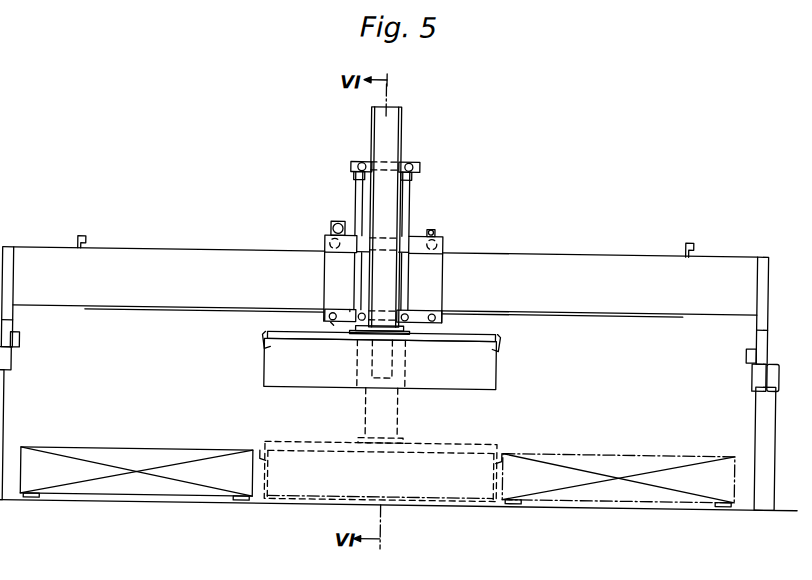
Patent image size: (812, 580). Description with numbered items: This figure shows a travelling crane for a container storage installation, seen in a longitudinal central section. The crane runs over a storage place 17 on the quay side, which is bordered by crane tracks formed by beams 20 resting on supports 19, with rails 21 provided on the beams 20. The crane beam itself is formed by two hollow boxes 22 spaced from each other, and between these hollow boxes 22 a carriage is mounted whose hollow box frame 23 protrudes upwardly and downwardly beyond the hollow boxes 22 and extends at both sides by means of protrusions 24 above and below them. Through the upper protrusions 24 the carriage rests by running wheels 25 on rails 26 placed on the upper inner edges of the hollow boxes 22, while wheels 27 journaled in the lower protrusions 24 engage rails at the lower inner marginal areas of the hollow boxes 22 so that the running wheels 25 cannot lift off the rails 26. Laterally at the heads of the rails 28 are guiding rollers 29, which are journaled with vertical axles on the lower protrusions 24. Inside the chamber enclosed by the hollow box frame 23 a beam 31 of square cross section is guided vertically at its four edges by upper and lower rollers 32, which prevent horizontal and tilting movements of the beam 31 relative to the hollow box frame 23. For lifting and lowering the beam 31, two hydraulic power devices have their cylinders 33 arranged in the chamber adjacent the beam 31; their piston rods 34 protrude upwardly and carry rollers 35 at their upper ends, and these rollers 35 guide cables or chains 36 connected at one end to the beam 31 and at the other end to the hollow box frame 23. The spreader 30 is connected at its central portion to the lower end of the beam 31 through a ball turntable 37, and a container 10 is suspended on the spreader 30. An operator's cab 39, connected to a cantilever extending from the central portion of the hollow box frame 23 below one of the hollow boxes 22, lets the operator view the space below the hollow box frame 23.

The container 10 is at (497, 378).
The storage place 17 is at (258, 507).
The support 19 is at (5, 420).
The beam 20 is at (10, 370).
The rail 21 is at (18, 350).
The hollow box 22 is at (540, 254).
The hollow box frame 23 is at (440, 268).
The protrusion 24 is at (325, 318).
The running wheel 25 is at (324, 237).
The rail 26 is at (205, 251).
The wheel 27 is at (331, 323).
The rail 28 is at (206, 315).
The guiding roller 29 is at (350, 310).
The spreader 30 is at (497, 337).
The beam 31 is at (394, 117).
The roller 32 is at (416, 230).
The cylinder 33 is at (354, 272).
The piston rod 34 is at (352, 181).
The roller 35 is at (359, 161).
The cable or chain 36 is at (354, 200).
The ball turntable 37 is at (403, 327).
The operator's cab 39 is at (409, 382).